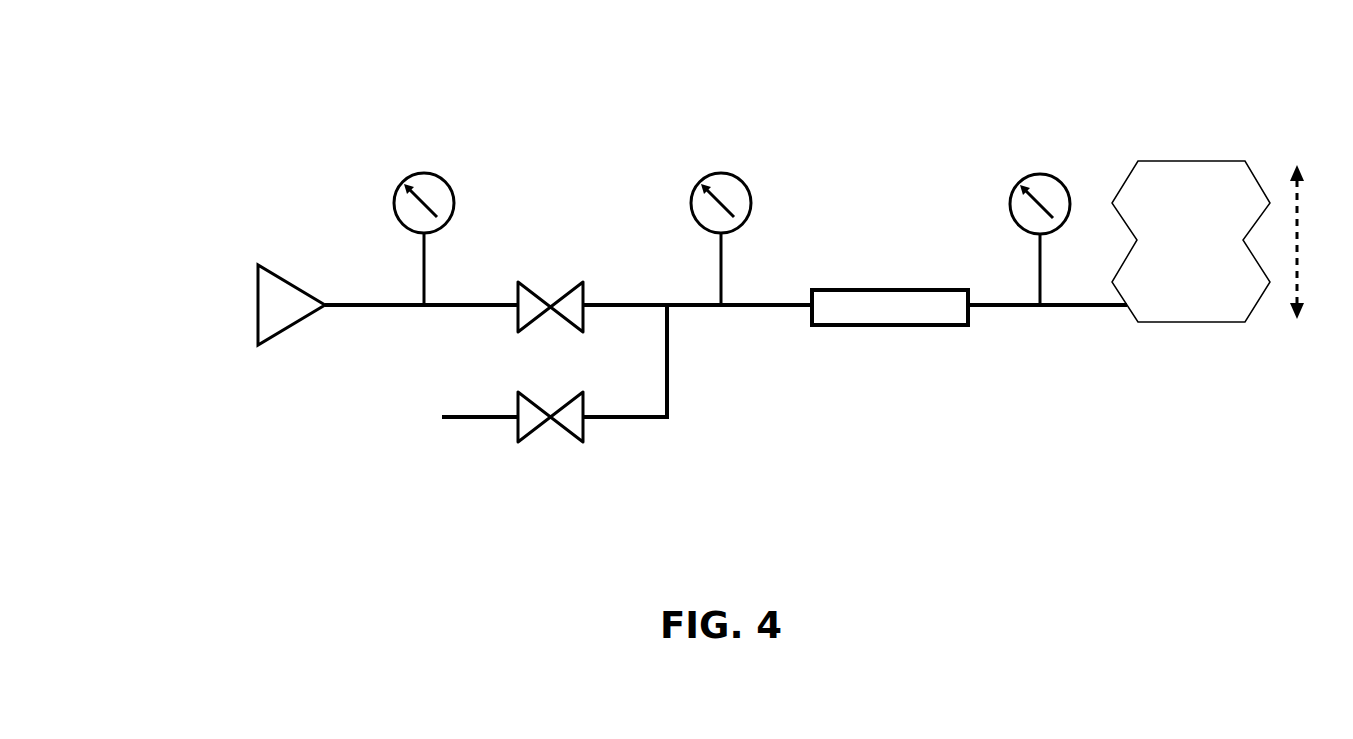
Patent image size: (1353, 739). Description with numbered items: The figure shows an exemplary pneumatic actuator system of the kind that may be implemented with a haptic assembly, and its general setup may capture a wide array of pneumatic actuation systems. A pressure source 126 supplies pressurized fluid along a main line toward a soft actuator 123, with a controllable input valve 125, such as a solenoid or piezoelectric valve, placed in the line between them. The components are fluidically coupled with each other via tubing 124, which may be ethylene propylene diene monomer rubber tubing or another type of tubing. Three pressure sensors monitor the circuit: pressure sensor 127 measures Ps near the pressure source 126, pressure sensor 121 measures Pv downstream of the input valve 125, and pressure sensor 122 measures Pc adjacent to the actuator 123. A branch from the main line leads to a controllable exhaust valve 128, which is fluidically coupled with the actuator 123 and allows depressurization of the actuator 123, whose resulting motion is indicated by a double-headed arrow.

The pressure sensor 121 is at (733, 170).
The pressure sensor 122 is at (1053, 163).
The actuator 123 is at (1240, 157).
The tubing 124 is at (933, 325).
The input valve 125 is at (573, 237).
The pressure source 126 is at (258, 343).
The pressure sensor 127 is at (402, 177).
The exhaust valve 128 is at (513, 473).